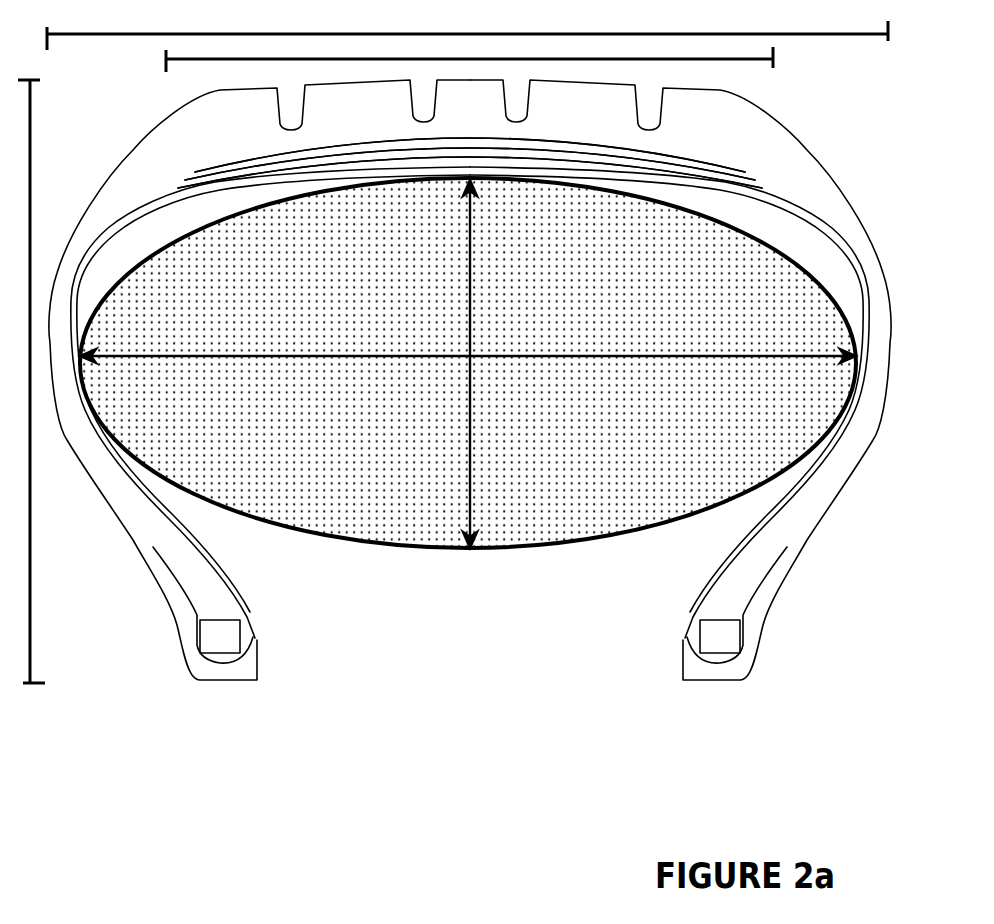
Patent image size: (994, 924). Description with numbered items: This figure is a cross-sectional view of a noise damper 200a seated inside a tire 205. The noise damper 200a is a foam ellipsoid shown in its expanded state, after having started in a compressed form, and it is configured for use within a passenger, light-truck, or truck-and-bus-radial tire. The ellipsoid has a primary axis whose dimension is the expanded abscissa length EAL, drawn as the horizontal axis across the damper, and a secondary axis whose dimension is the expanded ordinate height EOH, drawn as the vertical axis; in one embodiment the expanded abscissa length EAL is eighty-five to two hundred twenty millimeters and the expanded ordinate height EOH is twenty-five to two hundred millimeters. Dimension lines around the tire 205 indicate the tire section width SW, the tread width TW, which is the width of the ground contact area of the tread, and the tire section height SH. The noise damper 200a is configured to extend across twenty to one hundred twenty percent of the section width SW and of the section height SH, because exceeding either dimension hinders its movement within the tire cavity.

The tire 205 is at (827, 163).
The noise damper 200a is at (533, 550).
The expanded ordinate height EOH is at (468, 240).
The expanded abscissa length EAL is at (182, 354).
The tire section width SW is at (493, 35).
The tread width TW is at (495, 59).
The tire section height SH is at (35, 400).